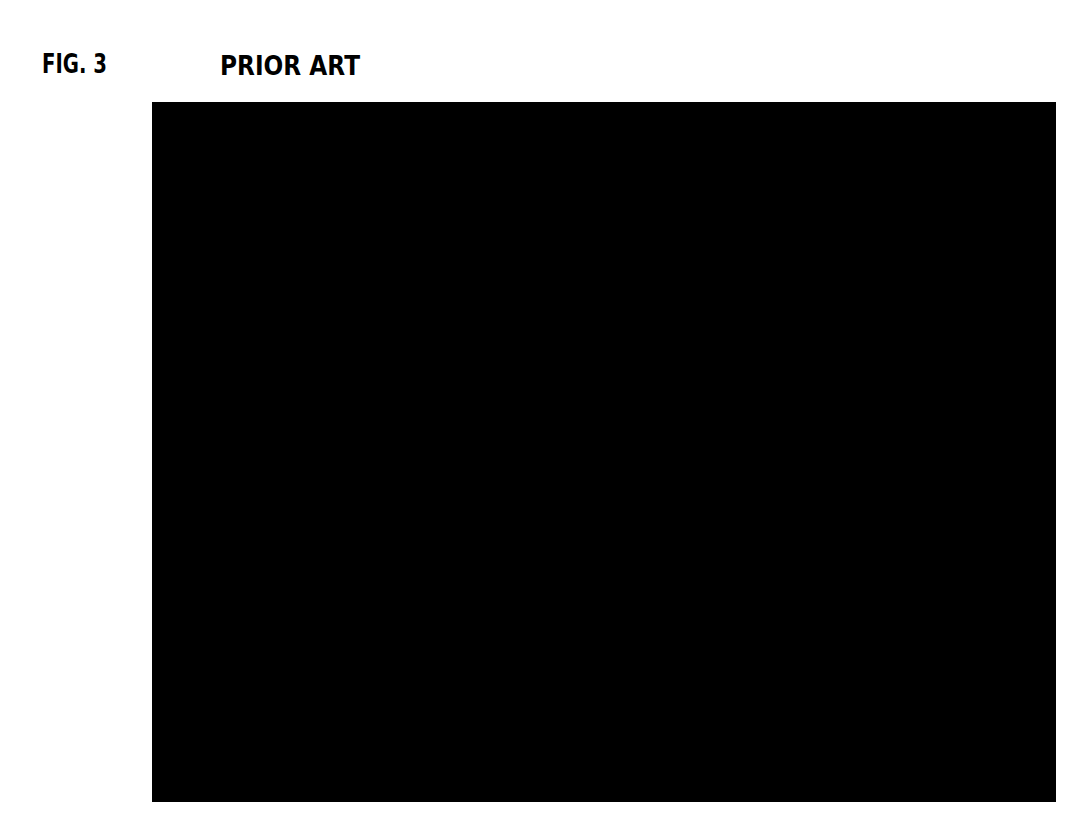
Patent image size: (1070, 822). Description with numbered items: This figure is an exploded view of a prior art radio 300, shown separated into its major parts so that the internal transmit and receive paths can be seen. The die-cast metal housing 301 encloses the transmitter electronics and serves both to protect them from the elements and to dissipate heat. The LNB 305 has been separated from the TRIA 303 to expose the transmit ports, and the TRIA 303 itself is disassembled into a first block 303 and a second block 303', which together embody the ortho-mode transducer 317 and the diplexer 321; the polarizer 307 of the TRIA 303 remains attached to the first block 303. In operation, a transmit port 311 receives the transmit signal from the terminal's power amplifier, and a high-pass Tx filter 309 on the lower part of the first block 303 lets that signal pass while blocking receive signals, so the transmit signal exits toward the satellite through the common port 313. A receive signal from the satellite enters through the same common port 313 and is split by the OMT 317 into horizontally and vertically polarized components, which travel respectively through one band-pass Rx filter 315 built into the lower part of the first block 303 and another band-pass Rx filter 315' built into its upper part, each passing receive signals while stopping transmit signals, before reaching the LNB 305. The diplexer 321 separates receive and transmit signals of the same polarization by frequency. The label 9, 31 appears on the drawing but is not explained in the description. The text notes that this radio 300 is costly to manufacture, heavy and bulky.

The radio 300 is at (103, 156).
The metal housing 301 is at (630, 634).
The TRIA (first block) 303 is at (720, 277).
The second block 303' is at (920, 436).
The LNB 305 is at (312, 415).
The polarizer 307 is at (886, 296).
The high-pass Tx filter 309 is at (712, 405).
The transmit (Tx) port 311 is at (903, 550).
The common port 313 is at (958, 421).
The band-pass Rx filter 315 is at (656, 285).
The band-pass Rx filter 315' is at (787, 246).
The ortho-mode transducer (OMT) 317 is at (763, 282).
The diplexer 321 is at (798, 292).
The inlet 9 is at (629, 346).
The outlet 31 is at (629, 346).